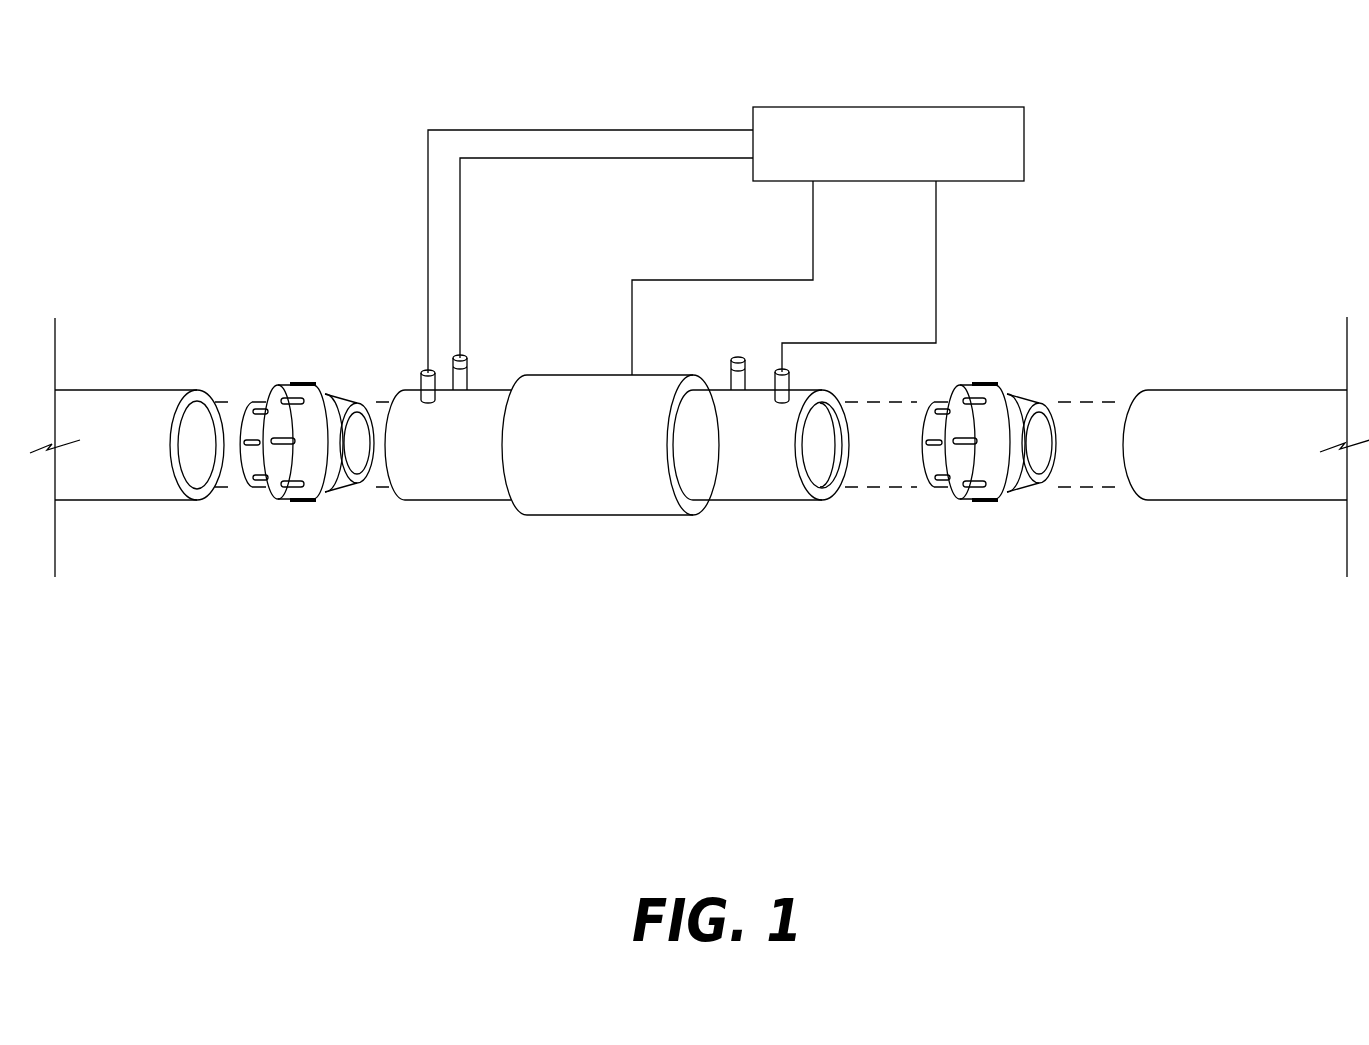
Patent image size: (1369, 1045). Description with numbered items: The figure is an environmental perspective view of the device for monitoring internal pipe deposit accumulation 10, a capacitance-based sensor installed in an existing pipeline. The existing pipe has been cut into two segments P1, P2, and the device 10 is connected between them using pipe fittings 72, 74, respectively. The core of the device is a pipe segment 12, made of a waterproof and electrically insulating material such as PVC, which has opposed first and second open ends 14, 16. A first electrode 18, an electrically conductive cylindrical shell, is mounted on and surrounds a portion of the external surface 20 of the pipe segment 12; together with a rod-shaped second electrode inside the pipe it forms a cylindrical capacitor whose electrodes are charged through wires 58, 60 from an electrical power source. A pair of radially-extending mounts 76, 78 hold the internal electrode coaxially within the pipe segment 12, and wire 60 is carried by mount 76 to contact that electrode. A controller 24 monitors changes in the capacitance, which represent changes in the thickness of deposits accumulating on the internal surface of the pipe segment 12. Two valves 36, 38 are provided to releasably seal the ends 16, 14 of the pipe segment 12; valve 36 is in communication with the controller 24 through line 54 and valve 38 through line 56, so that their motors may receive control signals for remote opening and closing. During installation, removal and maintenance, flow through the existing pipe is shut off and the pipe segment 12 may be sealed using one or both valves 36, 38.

The device for monitoring internal pipe deposit accumulation 10 is at (363, 90).
The pipe segment 12 is at (447, 487).
The first open end 14 is at (393, 497).
The second open end 16 is at (822, 458).
The first electrode 18 is at (552, 383).
The external surface 20 is at (742, 487).
The controller 24 is at (980, 107).
The valve 36 is at (790, 380).
The valve 38 is at (421, 378).
The line 54 is at (936, 250).
The line 56 is at (427, 265).
The wire 58 is at (813, 232).
The wire 60 is at (460, 212).
The pipe fitting 72 is at (290, 500).
The pipe fitting 74 is at (1010, 492).
The radially-extending mount 76 is at (468, 366).
The radially-extending mount 78 is at (728, 372).
The existing pipe segment P1 is at (129, 369).
The existing pipe segment P2 is at (1231, 385).